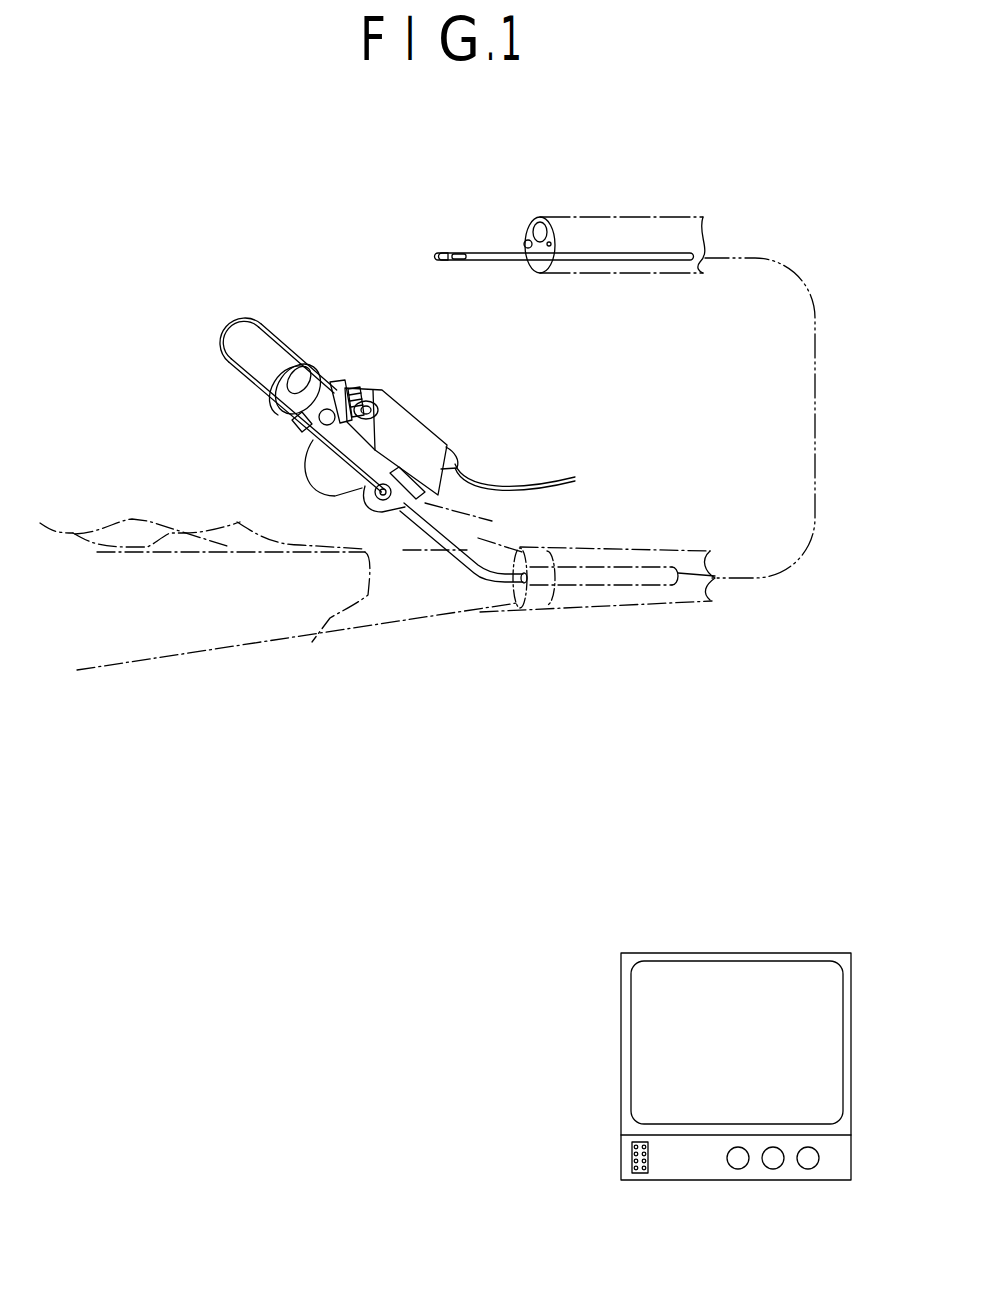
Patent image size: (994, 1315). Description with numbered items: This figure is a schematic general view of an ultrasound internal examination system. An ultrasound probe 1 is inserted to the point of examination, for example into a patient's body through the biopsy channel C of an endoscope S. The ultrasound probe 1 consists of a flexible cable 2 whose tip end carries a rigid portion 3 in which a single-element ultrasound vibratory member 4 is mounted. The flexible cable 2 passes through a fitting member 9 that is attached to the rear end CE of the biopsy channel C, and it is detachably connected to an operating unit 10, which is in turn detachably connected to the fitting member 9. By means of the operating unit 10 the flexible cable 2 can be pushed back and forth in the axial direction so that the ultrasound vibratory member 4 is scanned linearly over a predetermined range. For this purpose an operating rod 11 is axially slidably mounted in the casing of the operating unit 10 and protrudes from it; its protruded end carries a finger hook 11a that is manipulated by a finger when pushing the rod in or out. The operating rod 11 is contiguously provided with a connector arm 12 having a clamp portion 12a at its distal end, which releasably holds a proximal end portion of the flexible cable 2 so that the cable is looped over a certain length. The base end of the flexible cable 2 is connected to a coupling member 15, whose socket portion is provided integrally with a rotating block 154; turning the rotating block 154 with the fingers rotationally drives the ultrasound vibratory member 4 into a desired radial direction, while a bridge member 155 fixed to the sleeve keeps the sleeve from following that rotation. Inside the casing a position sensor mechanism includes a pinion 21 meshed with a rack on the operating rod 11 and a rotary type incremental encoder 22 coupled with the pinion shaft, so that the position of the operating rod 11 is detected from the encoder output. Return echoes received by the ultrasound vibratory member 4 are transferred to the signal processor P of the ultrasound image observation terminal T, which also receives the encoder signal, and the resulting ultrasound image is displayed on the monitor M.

The ultrasound probe 1 is at (482, 586).
The flexible cable 2 is at (497, 268).
The rigid portion 3 is at (437, 257).
The ultrasound vibratory member 4 is at (454, 254).
The fitting member 9 is at (391, 512).
The operating unit 10 is at (421, 416).
The operating rod 11 is at (322, 383).
The finger hook 11a is at (275, 372).
The connector arm 12 is at (292, 416).
The clamp portion 12a is at (303, 438).
The coupling member 15 is at (371, 402).
The pinion 21 is at (550, 470).
The rotary type incremental encoder 22 is at (322, 464).
The rotating block 154 is at (370, 392).
The bridge member 155 is at (355, 390).
The biopsy channel C is at (633, 592).
The rear end of the biopsy channel CE is at (492, 521).
The endoscope S is at (174, 662).
The monitor M is at (757, 951).
The ultrasound image observation terminal T is at (620, 1048).
The signal processor P is at (692, 1181).